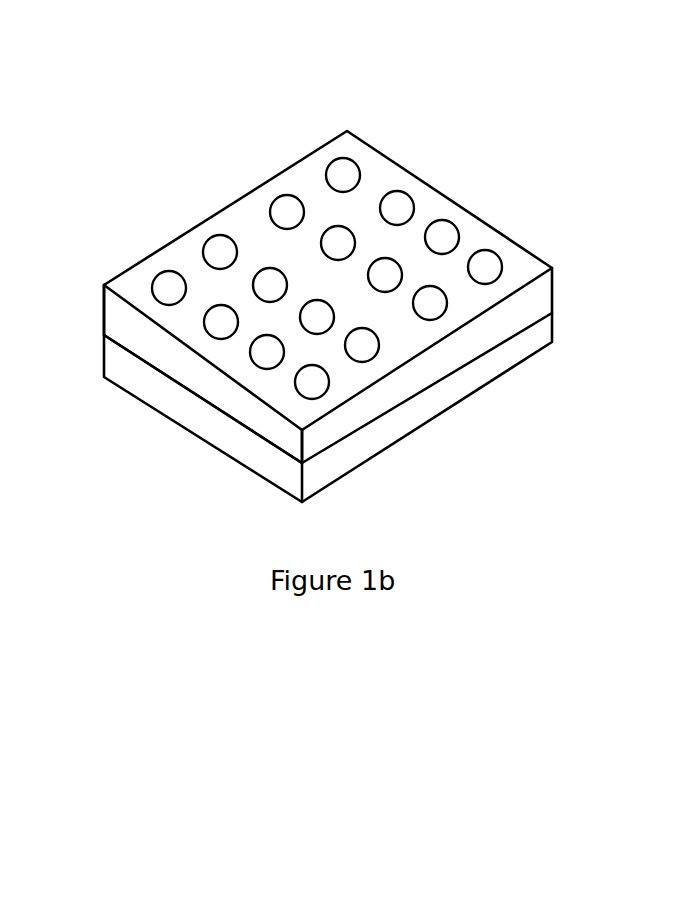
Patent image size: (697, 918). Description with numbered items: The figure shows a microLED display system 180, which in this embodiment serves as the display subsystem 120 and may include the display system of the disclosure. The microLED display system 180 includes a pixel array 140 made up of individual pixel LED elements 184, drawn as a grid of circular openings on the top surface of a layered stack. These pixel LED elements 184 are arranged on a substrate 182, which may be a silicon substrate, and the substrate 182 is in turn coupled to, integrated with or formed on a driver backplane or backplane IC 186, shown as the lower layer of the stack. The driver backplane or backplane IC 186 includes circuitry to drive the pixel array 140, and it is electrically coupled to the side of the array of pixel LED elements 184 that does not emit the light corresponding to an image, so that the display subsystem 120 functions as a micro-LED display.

The microLED display system 180 is at (573, 133).
The pixel array 140 is at (382, 182).
The pixel LED element 184 is at (216, 245).
The driver backplane or backplane IC 186 is at (553, 313).
The substrate 182 is at (170, 368).
The display subsystem 120 is at (517, 330).